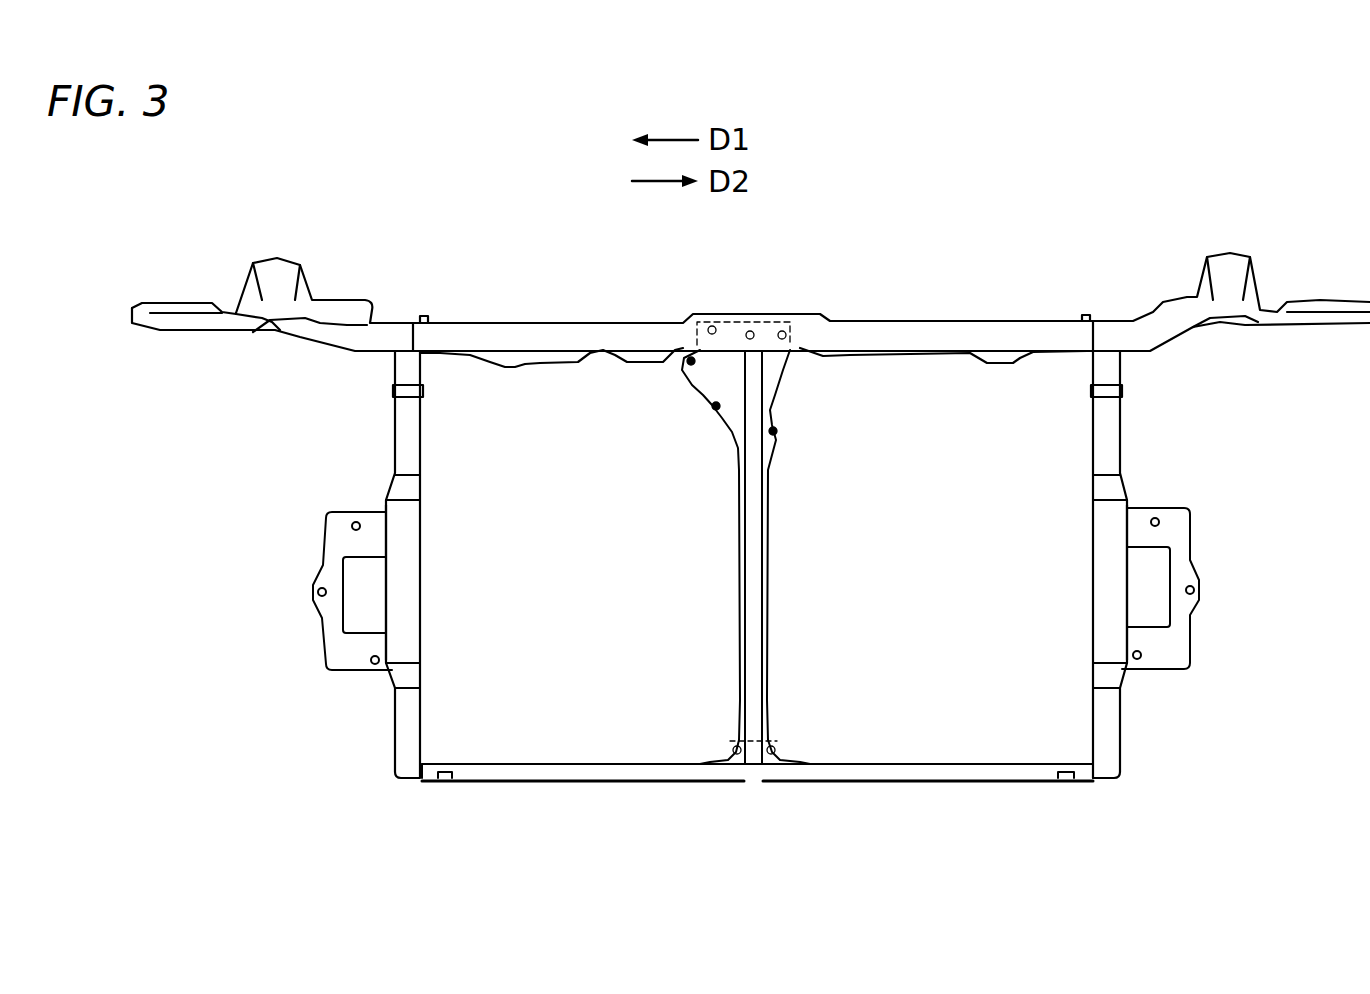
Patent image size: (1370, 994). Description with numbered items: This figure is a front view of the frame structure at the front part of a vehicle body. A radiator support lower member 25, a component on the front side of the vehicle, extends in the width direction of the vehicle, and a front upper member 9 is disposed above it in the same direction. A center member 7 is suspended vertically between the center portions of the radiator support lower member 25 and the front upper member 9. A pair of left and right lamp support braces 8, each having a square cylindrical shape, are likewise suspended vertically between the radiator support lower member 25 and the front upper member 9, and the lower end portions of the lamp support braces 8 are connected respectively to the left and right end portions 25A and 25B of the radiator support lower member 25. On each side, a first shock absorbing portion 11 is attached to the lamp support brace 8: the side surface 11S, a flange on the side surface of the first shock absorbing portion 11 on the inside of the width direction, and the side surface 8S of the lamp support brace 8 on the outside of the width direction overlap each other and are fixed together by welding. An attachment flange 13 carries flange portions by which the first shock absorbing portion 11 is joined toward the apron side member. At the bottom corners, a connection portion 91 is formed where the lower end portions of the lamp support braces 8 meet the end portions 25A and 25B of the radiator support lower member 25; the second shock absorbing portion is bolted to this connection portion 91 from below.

The front upper member 9 is at (865, 333).
The lamp support brace 8 is at (417, 613).
The side surface of the lamp support brace 8S is at (383, 613).
The side surface of the first shock absorbing portion 11S is at (387, 567).
The attachment flange 13 is at (334, 533).
The first shock absorbing portion 11 is at (350, 605).
The center member 7 is at (757, 521).
The radiator support lower member 25 is at (878, 768).
The end portion of the radiator support lower member 25A is at (1078, 782).
The end portion of the radiator support lower member 25B is at (448, 782).
The connection portion 91 is at (405, 810).